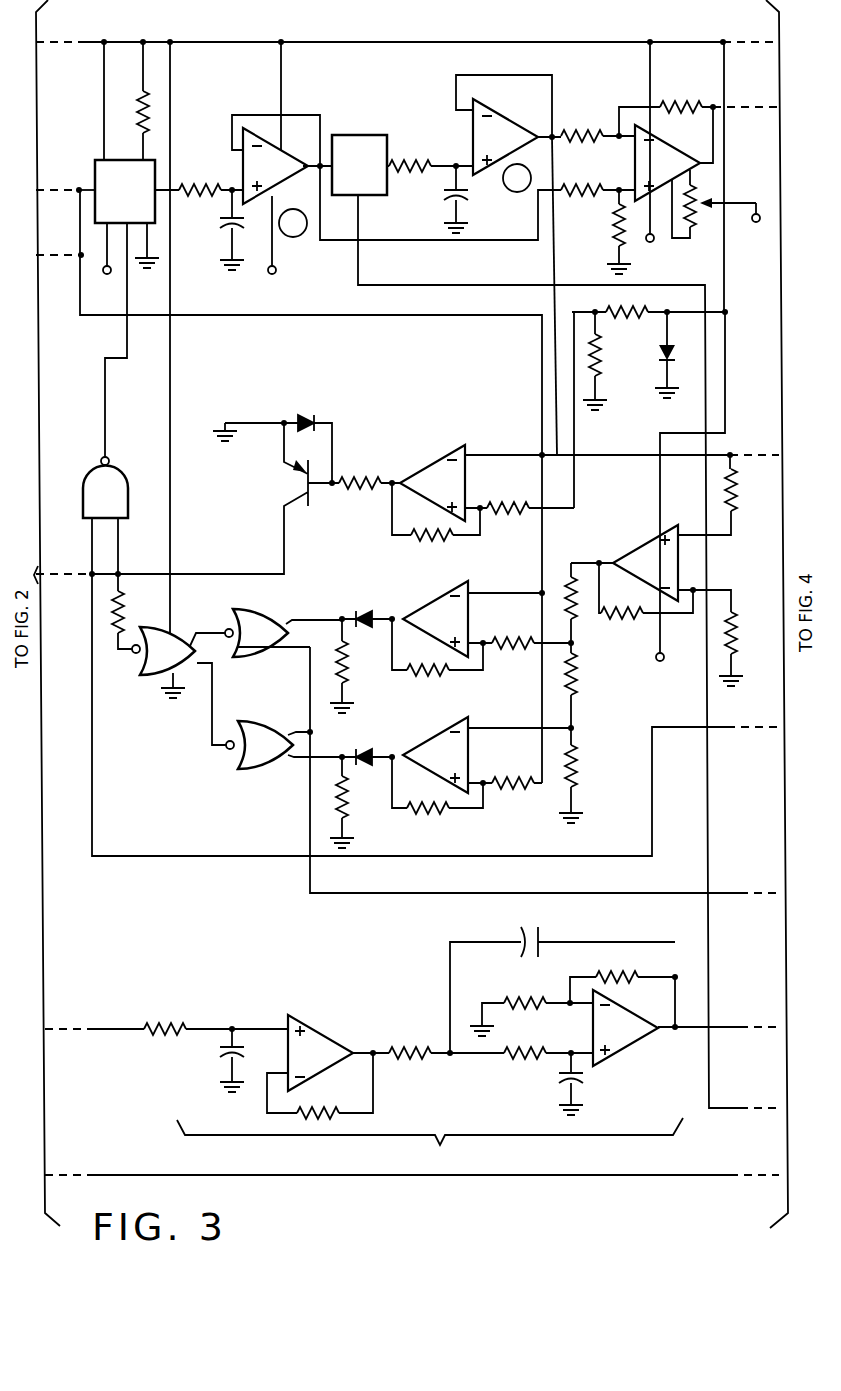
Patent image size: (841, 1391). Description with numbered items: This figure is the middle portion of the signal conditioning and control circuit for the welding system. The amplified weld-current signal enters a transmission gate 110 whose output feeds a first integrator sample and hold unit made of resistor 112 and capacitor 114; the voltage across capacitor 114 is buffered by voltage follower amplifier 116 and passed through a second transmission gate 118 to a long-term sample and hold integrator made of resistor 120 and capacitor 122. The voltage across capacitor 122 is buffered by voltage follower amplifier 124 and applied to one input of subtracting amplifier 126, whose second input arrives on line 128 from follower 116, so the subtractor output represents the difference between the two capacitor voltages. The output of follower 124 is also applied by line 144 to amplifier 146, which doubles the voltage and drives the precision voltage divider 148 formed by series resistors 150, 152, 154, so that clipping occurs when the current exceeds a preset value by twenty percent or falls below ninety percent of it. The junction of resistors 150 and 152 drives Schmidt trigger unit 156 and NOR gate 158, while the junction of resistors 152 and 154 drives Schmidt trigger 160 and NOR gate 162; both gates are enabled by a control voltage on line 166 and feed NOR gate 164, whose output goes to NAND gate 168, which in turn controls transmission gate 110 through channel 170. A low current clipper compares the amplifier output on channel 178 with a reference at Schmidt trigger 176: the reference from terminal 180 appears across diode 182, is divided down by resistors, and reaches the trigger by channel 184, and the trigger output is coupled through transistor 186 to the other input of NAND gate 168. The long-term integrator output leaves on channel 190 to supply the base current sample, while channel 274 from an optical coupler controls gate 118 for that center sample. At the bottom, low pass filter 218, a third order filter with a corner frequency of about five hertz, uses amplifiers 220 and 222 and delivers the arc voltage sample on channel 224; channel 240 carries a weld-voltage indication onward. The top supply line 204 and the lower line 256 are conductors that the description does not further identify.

The transmission gate 110 is at (95, 165).
The resistor 112 is at (213, 184).
The capacitor 114 is at (236, 230).
The voltage follower amplifier 116 is at (272, 170).
The transmission gate 118 is at (358, 136).
The resistor 120 is at (415, 180).
The capacitor 122 is at (472, 190).
The voltage follower amplifier 124 is at (507, 136).
The subtracting amplifier 126 is at (650, 156).
The line 128 is at (455, 245).
The line 144 is at (552, 262).
The amplifier 146 is at (645, 558).
The voltage divider 148 is at (591, 679).
The resistor 150 is at (574, 618).
The resistor 152 is at (574, 688).
The resistor 154 is at (575, 786).
The Schmidt trigger unit 156 is at (450, 604).
The NOR gate 158 is at (268, 628).
The Schmidt trigger 160 is at (445, 745).
The NOR gate 162 is at (268, 770).
The NOR gate 164 is at (185, 640).
The line 166 is at (310, 826).
The NAND gate 168 is at (140, 450).
The channel 170 is at (105, 392).
The Schmidt trigger 176 is at (448, 468).
The channel 178 is at (398, 318).
The terminal 180 is at (728, 312).
The diode 182 is at (665, 360).
The channel 184 is at (580, 494).
The transistor 186 is at (295, 475).
The channel 190 is at (730, 455).
The supply line 204 is at (573, 40).
The low pass filter 218 is at (364, 1051).
The amplifier 220 is at (355, 1013).
The amplifier 222 is at (628, 1030).
The channel 224 is at (743, 1026).
The channel 240 is at (488, 858).
The line 256 is at (658, 1175).
The channel 274 is at (743, 1108).